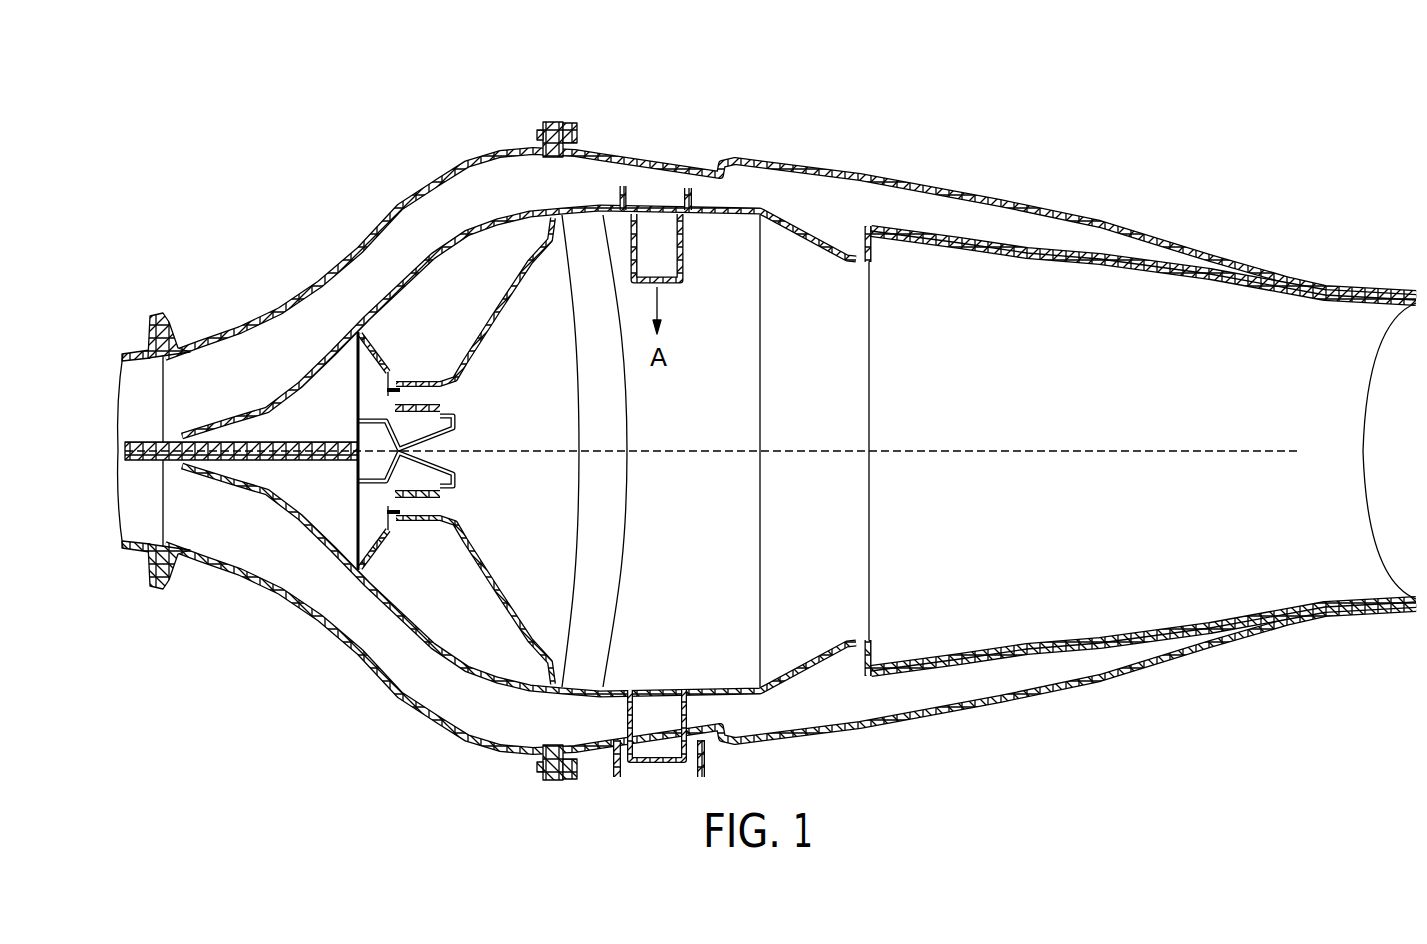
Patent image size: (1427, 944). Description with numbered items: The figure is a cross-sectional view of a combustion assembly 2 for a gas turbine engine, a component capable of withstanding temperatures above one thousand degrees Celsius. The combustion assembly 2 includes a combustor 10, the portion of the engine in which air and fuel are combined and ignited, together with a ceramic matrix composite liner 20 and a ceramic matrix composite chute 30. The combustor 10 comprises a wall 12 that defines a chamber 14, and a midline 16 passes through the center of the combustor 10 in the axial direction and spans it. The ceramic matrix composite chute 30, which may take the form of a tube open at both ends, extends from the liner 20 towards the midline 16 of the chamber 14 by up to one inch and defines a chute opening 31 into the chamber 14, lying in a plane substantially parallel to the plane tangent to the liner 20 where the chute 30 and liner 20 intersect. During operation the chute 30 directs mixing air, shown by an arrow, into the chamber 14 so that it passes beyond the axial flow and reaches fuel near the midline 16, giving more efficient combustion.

The combustion assembly 2 is at (1110, 176).
The combustor 10 is at (782, 158).
The wall 12 is at (823, 239).
The chamber 14 is at (523, 521).
The midline 16 is at (811, 455).
The ceramic matrix composite liner 20 is at (914, 250).
The ceramic matrix composite chute 30 is at (684, 262).
The chute opening 31 is at (641, 288).